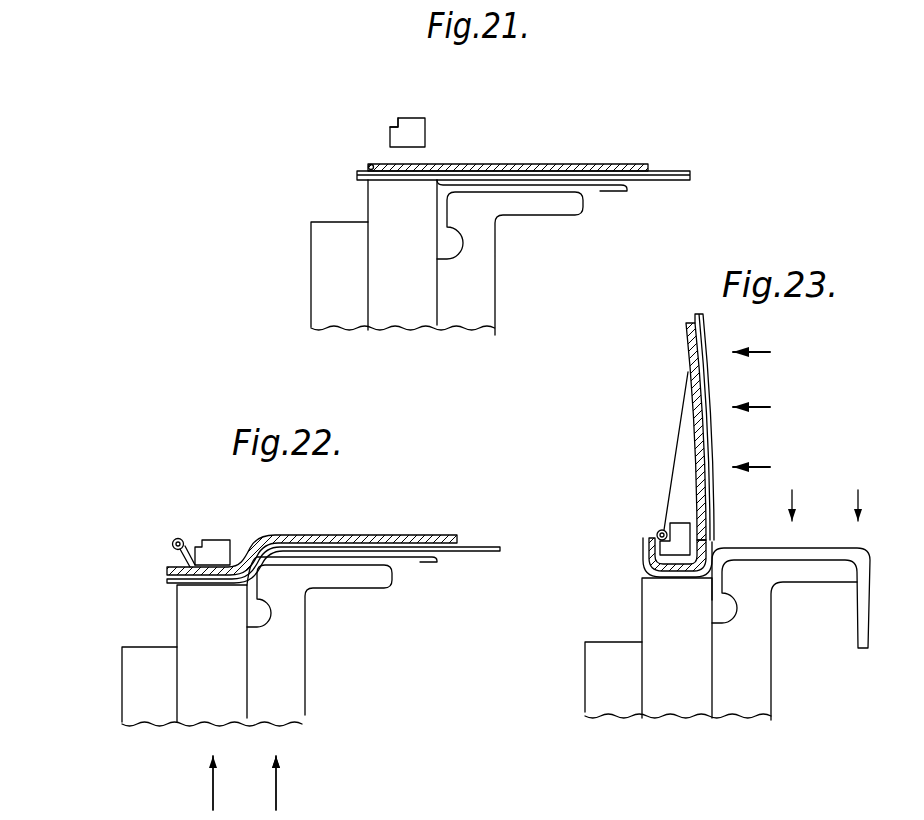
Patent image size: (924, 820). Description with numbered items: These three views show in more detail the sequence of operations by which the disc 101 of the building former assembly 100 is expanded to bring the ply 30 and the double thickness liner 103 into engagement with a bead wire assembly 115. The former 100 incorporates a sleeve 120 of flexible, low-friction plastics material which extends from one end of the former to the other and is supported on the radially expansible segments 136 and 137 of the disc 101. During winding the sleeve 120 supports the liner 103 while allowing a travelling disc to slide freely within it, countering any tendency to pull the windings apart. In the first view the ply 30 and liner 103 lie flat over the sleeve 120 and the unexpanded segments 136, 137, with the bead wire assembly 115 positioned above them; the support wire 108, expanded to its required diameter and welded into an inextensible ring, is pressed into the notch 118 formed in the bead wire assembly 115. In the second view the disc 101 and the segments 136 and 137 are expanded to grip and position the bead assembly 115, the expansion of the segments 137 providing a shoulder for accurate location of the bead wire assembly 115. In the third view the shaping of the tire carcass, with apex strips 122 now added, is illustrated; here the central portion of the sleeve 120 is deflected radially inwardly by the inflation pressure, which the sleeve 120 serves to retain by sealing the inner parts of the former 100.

In FIG. 21, the ply 30 is at (566, 163).
In FIG. 22, the ply 30 is at (365, 536).
In FIG. 23, the ply 30 is at (677, 447).
In FIG. 21, the building former assembly 100 is at (533, 143).
In FIG. 21, the disc 101 is at (397, 276).
In FIG. 22, the disc 101 is at (202, 683).
In FIG. 23, the disc 101 is at (678, 679).
In FIG. 21, the liner 103 is at (671, 177).
In FIG. 22, the liner 103 is at (333, 565).
In FIG. 23, the liner 103 is at (678, 445).
In FIG. 21, the support wire 108 is at (370, 163).
In FIG. 21, the bead wire assembly 115 is at (410, 126).
In FIG. 22, the bead wire assembly 115 is at (215, 540).
In FIG. 23, the bead wire assembly 115 is at (675, 539).
In FIG. 21, the notch 118 is at (397, 123).
In FIG. 22, the notch 118 is at (184, 553).
In FIG. 23, the notch 118 is at (662, 535).
In FIG. 21, the sleeve 120 is at (618, 187).
In FIG. 22, the sleeve 120 is at (411, 558).
In FIG. 23, the sleeve 120 is at (858, 636).
In FIG. 23, the apex strip 122 is at (678, 476).
In FIG. 21, the radially slidable segment 136 is at (389, 307).
In FIG. 22, the radially slidable segment 136 is at (195, 712).
In FIG. 23, the radially slidable segment 136 is at (693, 710).
In FIG. 21, the radially slidable segment 137 is at (487, 276).
In FIG. 22, the radially slidable segment 137 is at (293, 672).
In FIG. 23, the radially slidable segment 137 is at (760, 702).